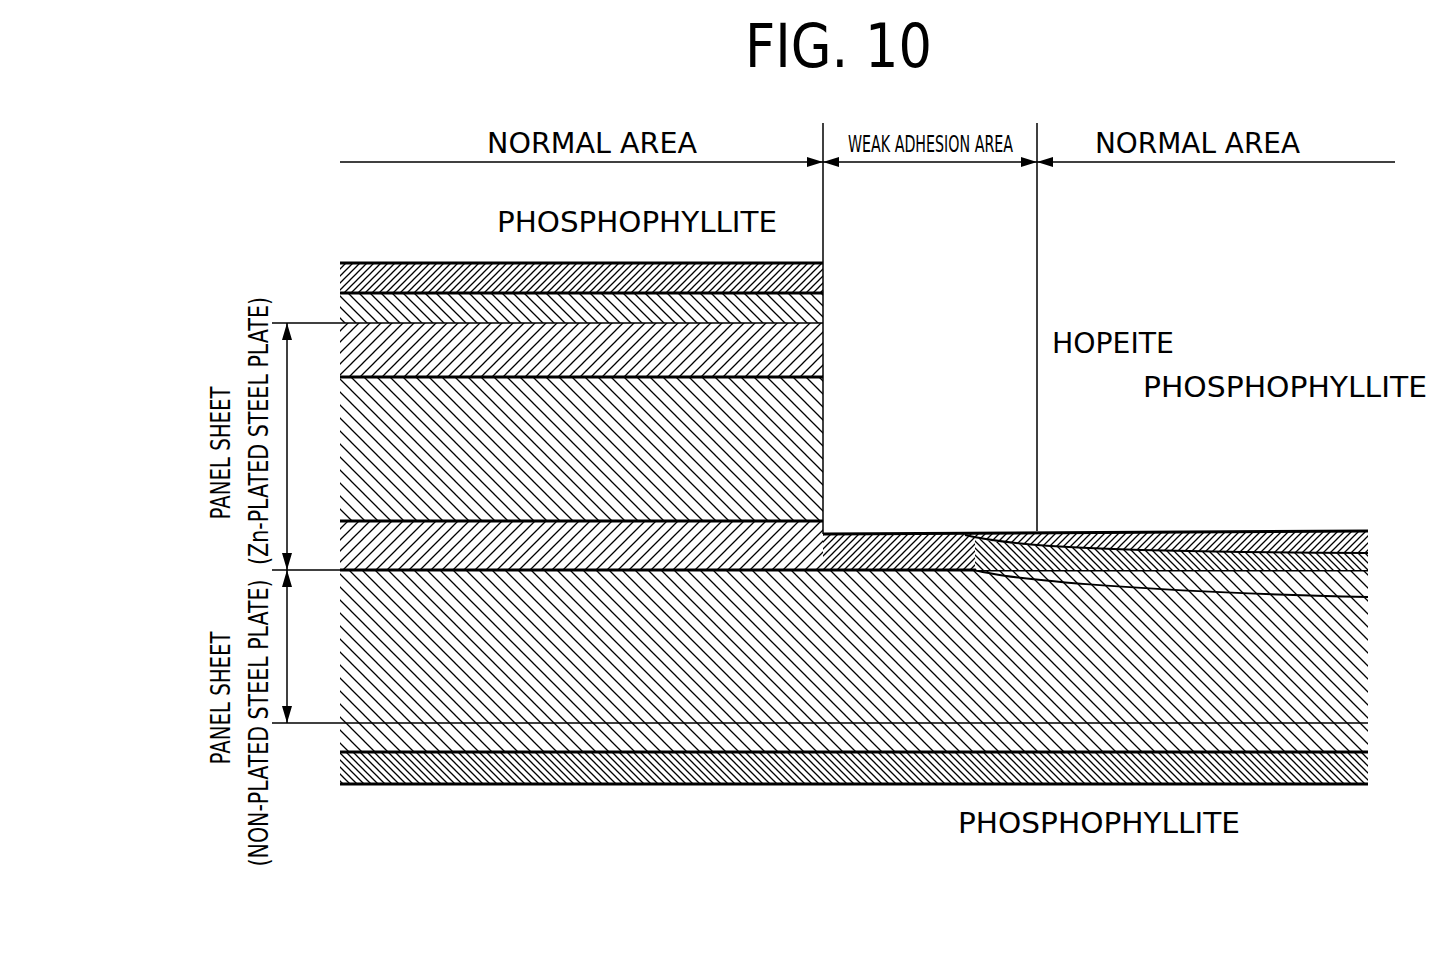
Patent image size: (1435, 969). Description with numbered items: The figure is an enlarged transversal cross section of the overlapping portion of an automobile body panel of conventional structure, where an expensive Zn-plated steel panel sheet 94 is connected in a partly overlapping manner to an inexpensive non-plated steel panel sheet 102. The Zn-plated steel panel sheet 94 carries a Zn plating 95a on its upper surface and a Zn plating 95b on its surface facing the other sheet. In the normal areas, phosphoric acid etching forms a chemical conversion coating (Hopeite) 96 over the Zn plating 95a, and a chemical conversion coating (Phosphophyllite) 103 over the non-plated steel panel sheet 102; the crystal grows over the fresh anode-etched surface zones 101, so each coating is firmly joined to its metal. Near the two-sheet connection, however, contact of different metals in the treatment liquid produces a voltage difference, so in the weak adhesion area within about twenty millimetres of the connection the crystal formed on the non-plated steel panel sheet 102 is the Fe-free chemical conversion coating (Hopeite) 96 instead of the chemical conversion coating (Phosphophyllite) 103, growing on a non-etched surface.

The Zn-plated steel panel sheet 94 is at (195, 452).
The Zn plating 95a is at (823, 350).
The Zn plating 95b is at (823, 515).
The chemical conversion coating (Hopeite) 96 is at (452, 263).
The anode-etched surface zone 101 is at (378, 305).
The non-plated steel panel sheet 102 is at (197, 700).
The chemical conversion coating (Phosphophyllite) 103 is at (1252, 531).